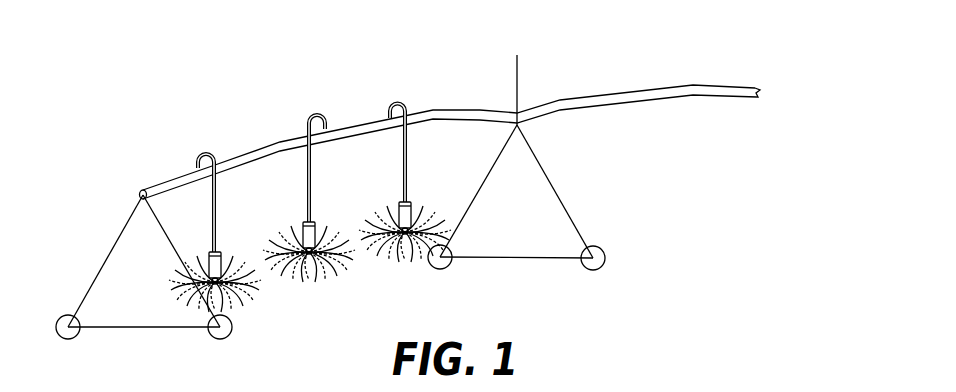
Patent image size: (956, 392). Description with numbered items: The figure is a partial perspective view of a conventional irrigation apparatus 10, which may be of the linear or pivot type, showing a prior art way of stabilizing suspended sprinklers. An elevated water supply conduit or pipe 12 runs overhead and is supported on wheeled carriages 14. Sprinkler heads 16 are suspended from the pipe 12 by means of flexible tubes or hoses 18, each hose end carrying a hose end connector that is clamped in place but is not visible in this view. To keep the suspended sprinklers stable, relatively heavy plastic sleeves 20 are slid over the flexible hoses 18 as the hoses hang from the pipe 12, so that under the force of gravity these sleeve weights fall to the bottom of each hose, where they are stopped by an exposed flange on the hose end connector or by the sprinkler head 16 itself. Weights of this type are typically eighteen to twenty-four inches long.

The irrigation apparatus 10 is at (393, 178).
The water supply pipe 12 is at (362, 123).
The wheeled carriage 14 is at (97, 253).
The sprinkler head 16 is at (238, 297).
The flexible hose 18 is at (217, 210).
The plastic sleeve 20 is at (210, 257).